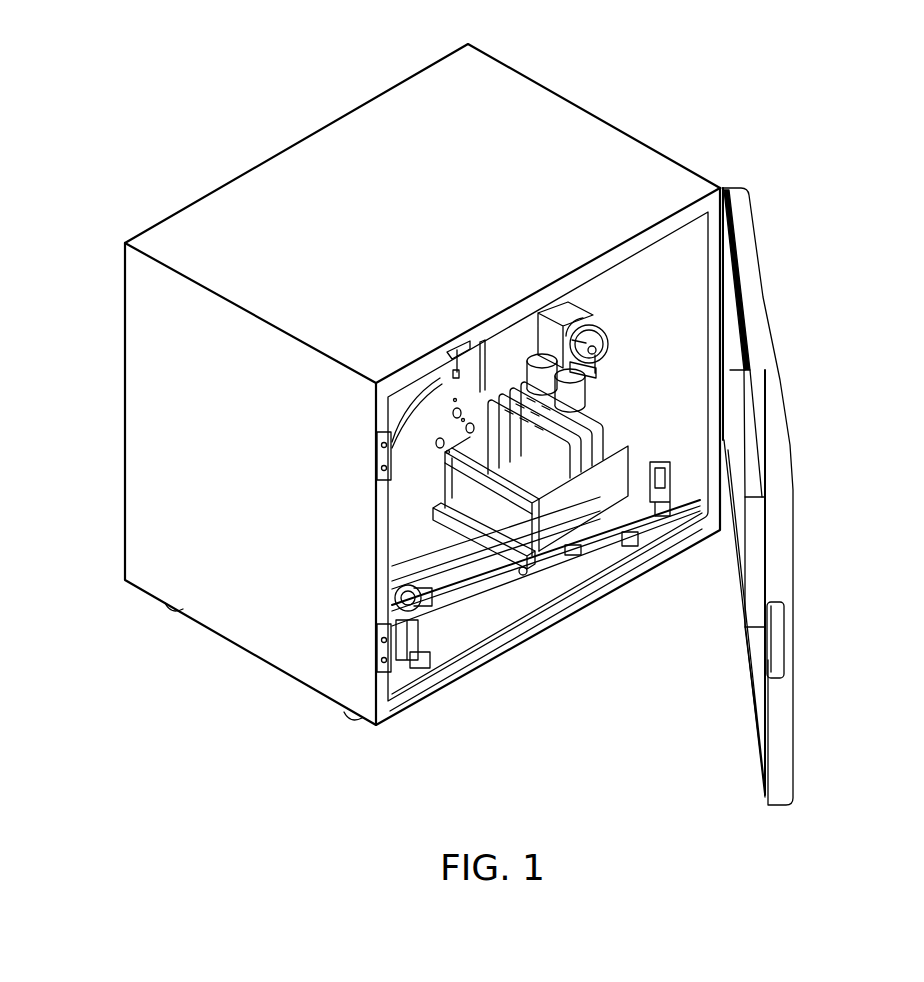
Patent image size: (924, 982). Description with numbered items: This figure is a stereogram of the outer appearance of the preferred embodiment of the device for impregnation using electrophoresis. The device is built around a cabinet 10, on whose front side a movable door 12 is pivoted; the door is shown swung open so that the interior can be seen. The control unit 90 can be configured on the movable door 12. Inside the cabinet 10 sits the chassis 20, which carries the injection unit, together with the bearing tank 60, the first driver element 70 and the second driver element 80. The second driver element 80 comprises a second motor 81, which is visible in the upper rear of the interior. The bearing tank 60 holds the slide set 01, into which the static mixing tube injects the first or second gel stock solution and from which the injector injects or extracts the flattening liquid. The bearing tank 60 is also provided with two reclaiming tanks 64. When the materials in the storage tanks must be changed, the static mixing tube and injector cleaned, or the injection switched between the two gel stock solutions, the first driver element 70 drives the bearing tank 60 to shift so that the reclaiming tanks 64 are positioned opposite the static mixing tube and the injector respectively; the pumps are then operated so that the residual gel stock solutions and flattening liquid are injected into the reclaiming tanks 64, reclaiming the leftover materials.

The cabinet 10 is at (593, 138).
The movable door 12 is at (763, 342).
The chassis 20 is at (515, 623).
The bearing tank 60 is at (553, 528).
The reclaiming tanks 64 is at (582, 390).
The first driver element 70 is at (443, 598).
The second driver element 80 is at (603, 306).
The second motor 81 is at (598, 338).
The control unit 90 is at (752, 472).
The slide set 01 is at (577, 480).